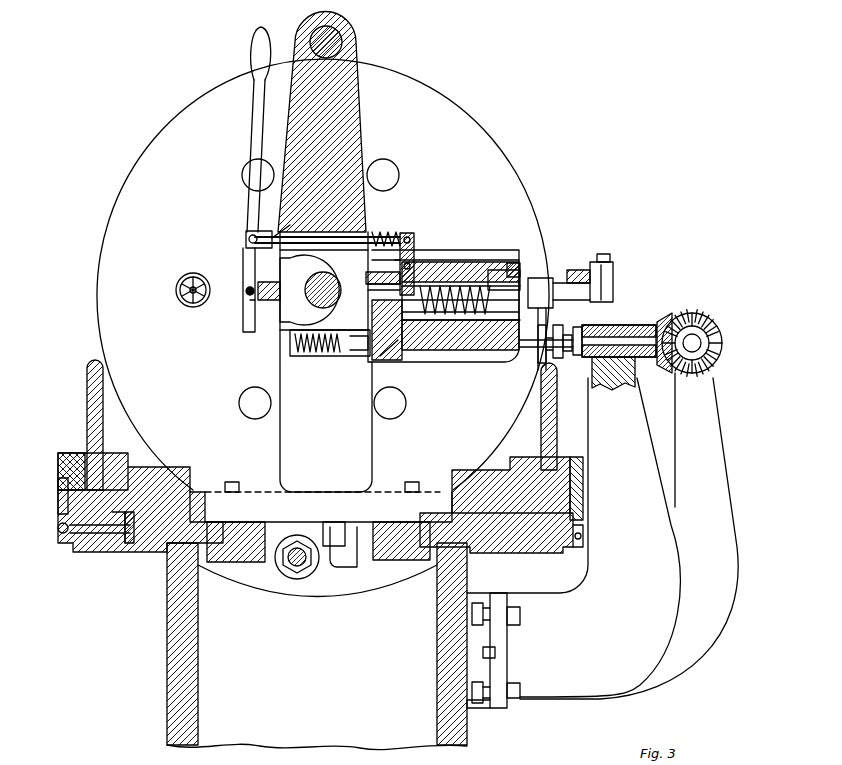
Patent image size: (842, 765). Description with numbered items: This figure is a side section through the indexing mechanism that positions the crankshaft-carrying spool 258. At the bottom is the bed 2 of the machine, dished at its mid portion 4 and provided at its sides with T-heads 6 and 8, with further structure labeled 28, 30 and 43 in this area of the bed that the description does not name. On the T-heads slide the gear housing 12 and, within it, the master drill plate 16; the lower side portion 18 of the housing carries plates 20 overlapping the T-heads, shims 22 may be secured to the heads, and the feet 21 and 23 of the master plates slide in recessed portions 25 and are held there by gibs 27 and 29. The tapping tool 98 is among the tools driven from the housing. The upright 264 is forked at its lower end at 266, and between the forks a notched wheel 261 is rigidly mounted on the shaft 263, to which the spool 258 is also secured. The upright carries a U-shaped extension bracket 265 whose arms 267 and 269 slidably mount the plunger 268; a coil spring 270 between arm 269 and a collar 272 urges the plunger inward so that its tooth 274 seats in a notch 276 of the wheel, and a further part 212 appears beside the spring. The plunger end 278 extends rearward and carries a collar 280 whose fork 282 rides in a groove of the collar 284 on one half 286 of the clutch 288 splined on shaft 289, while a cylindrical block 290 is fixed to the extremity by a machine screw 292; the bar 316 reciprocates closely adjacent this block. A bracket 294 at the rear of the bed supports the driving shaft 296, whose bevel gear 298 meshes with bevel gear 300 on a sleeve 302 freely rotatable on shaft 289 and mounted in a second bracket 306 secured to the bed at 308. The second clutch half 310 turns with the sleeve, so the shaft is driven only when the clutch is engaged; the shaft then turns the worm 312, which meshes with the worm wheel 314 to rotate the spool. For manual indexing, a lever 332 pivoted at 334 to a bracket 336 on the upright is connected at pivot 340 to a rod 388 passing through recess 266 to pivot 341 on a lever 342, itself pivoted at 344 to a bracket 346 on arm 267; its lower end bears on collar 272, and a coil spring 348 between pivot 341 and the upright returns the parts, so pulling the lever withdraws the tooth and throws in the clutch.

The bed 2 is at (190, 688).
The dished mid portion 4 is at (350, 600).
The T-head 6 is at (198, 500).
The T-head 8 is at (420, 505).
The gear housing 12 is at (444, 106).
The master drill plate 16 is at (92, 392).
The lower side portion of housing 18 is at (92, 540).
The plate 20 is at (118, 548).
The foot 21 is at (78, 470).
The shim 22 is at (131, 548).
The foot 23 is at (583, 528).
The recessed portion 25 is at (61, 533).
The gib 27 is at (58, 486).
The bolt 28 is at (297, 580).
The gib 29 is at (112, 455).
The stop 30 is at (336, 530).
The frame 43 is at (317, 754).
The tapping tool 98 is at (177, 283).
The spring 212 is at (445, 282).
The spool 258 is at (260, 318).
The notched wheel 261 is at (300, 272).
The shaft 263 is at (308, 318).
The upright 264 is at (352, 95).
The U-shaped extension bracket 265 is at (437, 362).
The fork 266 is at (290, 222).
The arm 267 is at (405, 262).
The plunger 268 is at (455, 312).
The arm 269 is at (533, 272).
The coil spring 270 is at (492, 276).
The collar 272 is at (461, 288).
The tooth 274 is at (388, 352).
The notch 276 is at (262, 283).
The plunger end 278 is at (614, 295).
The collar 280 is at (549, 282).
The fork 282 is at (524, 349).
The collar 284 is at (538, 345).
The clutch half 286 is at (565, 355).
The clutch 288 is at (576, 312).
The shaft 289 is at (622, 390).
The cylindrical block 290 is at (614, 280).
The machine screw 292 is at (608, 258).
The bracket 294 is at (712, 430).
The driving shaft 296 is at (692, 343).
The bevel gear 298 is at (720, 360).
The bevel gear 300 is at (668, 322).
The sleeve 302 is at (622, 332).
The second bracket 306 is at (655, 645).
The securing point 308 is at (520, 698).
The second clutch half 310 is at (598, 400).
The worm 312 is at (307, 348).
The worm wheel 314 is at (322, 358).
The bar 316 is at (601, 262).
The lever 332 is at (252, 97).
The pivot 334 is at (250, 297).
The bracket 336 is at (290, 330).
The pivot 340 is at (250, 235).
The pivot 341 is at (412, 245).
The lever 342 is at (460, 317).
The pivot 344 is at (400, 278).
The bracket 346 is at (392, 250).
The coil spring 348 is at (376, 233).
The rod 388 is at (356, 230).